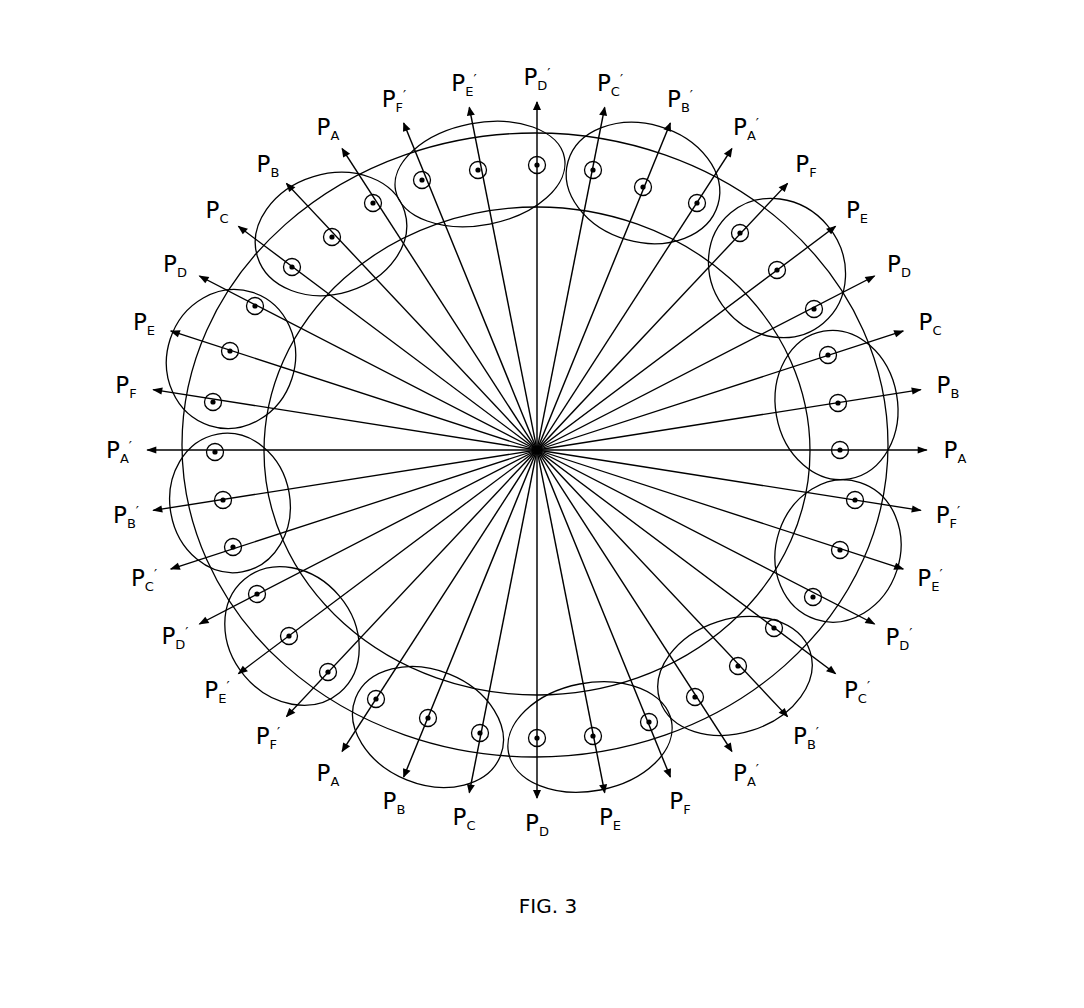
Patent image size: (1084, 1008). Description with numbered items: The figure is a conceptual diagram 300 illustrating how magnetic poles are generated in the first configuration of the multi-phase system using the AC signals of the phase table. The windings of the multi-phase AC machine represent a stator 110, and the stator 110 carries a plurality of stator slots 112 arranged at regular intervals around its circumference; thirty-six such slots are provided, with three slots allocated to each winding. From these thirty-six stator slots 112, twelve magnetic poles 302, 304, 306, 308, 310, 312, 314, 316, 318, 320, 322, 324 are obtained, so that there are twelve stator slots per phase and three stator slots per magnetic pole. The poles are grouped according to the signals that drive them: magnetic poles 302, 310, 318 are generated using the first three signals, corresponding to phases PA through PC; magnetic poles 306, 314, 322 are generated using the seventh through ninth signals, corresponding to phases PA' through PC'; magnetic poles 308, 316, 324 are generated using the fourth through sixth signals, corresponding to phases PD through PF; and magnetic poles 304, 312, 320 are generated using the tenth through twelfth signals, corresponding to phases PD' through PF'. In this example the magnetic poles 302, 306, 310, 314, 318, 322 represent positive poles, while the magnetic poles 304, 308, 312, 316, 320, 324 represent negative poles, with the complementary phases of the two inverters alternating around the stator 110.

The conceptual diagram 300 is at (181, 92).
The stator 110 is at (848, 305).
The stator slot 112 is at (777, 250).
The magnetic pole 302 is at (300, 178).
The magnetic pole 304 is at (494, 122).
The magnetic pole 306 is at (627, 122).
The magnetic pole 308 is at (842, 263).
The magnetic pole 310 is at (886, 362).
The magnetic pole 312 is at (900, 548).
The magnetic pole 314 is at (748, 733).
The magnetic pole 316 is at (625, 790).
The magnetic pole 318 is at (424, 788).
The magnetic pole 320 is at (222, 638).
The magnetic pole 322 is at (168, 495).
The magnetic pole 324 is at (184, 318).